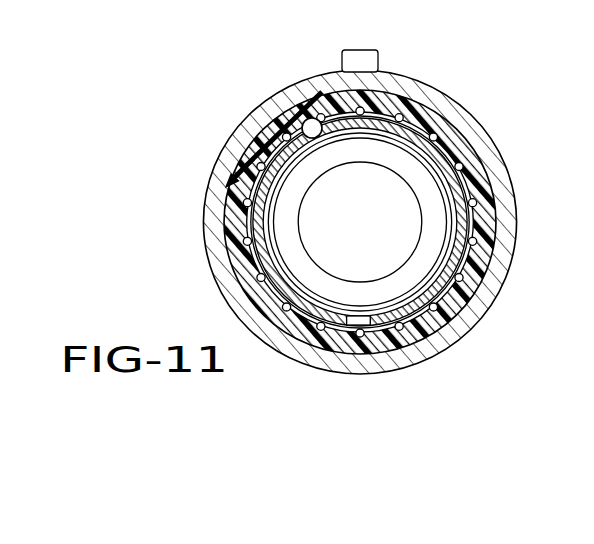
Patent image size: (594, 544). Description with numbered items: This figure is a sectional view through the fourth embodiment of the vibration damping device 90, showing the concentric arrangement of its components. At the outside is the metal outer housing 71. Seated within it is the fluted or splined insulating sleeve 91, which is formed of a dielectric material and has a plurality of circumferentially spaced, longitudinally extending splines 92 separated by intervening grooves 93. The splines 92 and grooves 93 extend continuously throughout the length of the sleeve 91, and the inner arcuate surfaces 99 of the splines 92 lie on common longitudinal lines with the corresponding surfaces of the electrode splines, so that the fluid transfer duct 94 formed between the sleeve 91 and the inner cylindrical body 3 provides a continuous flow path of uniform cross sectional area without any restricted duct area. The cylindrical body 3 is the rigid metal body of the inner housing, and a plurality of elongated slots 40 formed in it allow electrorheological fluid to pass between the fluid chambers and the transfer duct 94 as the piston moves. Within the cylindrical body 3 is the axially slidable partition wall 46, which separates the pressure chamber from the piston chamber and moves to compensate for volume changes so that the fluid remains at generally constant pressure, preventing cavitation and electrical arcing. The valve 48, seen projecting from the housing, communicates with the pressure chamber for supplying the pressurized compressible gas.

The vibration damping device 90 is at (472, 70).
The outer housing 71 is at (497, 123).
The insulating sleeve 91 is at (210, 192).
The grooves 93 is at (253, 277).
The fluid transfer duct 94 is at (250, 221).
The cylindrical body 3 is at (457, 186).
The elongated slots 40 is at (445, 273).
The partition wall 46 is at (318, 223).
The valve 48 is at (344, 54).
The inner arcuate surfaces 99 is at (307, 138).
The splines 92 is at (232, 176).